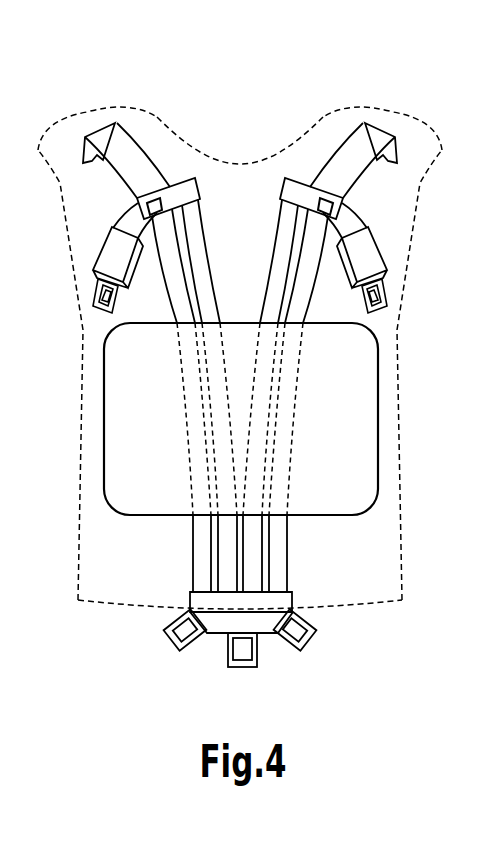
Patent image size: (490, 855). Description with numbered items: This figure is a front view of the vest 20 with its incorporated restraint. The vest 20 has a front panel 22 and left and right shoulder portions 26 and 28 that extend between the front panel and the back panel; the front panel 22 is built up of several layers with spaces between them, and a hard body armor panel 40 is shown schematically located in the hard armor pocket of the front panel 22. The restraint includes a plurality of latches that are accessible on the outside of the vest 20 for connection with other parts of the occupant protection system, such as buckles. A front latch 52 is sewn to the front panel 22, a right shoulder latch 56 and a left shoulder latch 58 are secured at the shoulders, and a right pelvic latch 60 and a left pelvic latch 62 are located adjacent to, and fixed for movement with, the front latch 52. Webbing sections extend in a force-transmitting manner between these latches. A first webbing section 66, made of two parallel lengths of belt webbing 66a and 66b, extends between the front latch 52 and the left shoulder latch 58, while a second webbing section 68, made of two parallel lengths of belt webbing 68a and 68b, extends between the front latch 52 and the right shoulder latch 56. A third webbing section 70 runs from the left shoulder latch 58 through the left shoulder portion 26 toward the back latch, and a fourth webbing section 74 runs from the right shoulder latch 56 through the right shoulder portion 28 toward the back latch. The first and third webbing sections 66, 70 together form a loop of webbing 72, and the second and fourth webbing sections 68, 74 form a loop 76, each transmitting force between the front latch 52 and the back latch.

The vest 20 is at (125, 622).
The front panel 22 is at (105, 567).
The left shoulder portion 26 is at (420, 122).
The right shoulder portion 28 is at (72, 122).
The hard body armor panel 40 is at (378, 489).
The front latch 52 is at (250, 667).
The right shoulder latch 56 is at (100, 297).
The left shoulder latch 58 is at (383, 296).
The right pelvic latch 60 is at (181, 652).
The left pelvic latch 62 is at (312, 640).
The first webbing section 66 is at (316, 372).
The length of belt webbing 66a is at (293, 227).
The length of belt webbing 66b is at (307, 275).
The second webbing section 68 is at (165, 378).
The length of belt webbing 68a is at (197, 433).
The length of belt webbing 68b is at (223, 458).
The third webbing section 70 is at (355, 170).
The loop of webbing 72 is at (308, 447).
The fourth webbing section 74 is at (125, 170).
The loop of webbing 76 is at (162, 349).